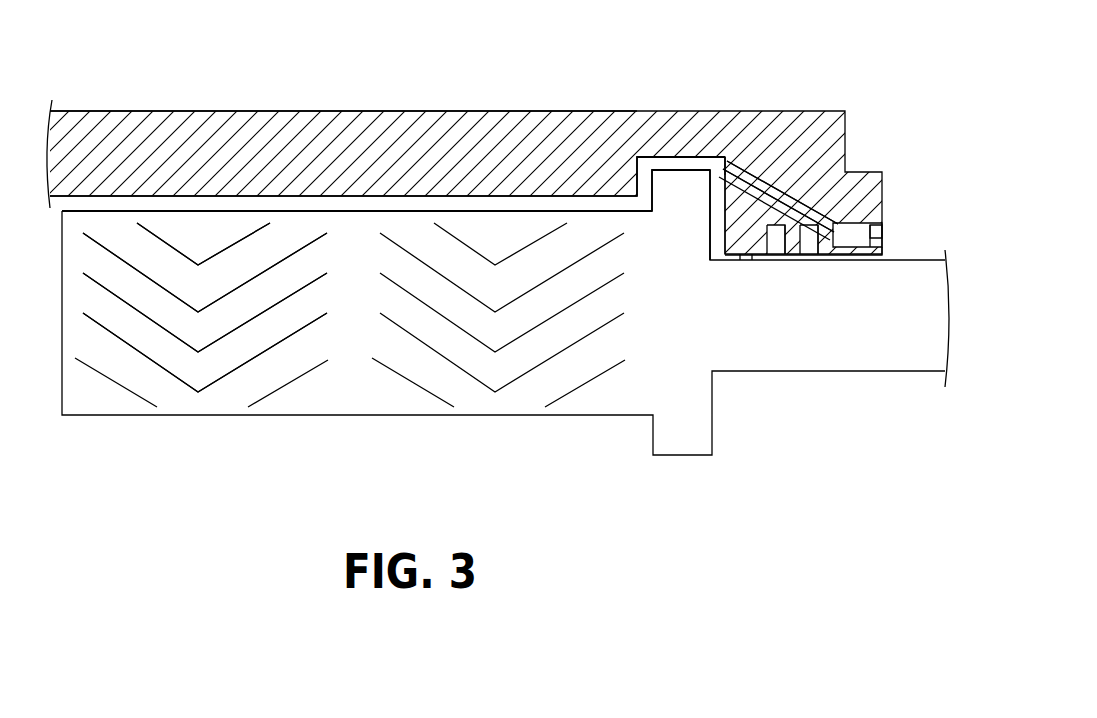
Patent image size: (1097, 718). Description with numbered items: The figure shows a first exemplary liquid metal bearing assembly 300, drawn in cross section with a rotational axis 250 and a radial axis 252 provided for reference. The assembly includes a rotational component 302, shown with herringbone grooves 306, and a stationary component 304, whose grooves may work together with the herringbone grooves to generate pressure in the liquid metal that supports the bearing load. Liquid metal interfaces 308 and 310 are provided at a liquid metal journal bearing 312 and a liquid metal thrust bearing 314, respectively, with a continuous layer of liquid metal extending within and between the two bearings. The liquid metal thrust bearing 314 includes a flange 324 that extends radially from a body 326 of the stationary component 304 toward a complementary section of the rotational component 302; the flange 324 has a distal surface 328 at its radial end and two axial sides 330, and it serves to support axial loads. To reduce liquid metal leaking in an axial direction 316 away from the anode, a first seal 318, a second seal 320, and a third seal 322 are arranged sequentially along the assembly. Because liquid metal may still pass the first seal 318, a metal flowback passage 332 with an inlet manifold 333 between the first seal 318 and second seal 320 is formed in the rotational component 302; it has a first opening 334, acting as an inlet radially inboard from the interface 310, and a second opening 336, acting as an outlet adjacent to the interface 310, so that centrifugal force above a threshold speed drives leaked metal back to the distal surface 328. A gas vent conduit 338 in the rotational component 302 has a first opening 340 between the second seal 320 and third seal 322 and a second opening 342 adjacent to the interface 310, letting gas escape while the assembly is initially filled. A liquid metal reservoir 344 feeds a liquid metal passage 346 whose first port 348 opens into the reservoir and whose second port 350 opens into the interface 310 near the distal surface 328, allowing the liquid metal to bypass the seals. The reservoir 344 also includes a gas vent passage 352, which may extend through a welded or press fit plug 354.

The liquid metal bearing assembly 300 is at (867, 33).
The rotational component 302 is at (197, 110).
The stationary component 304 is at (335, 418).
The herringbone grooves 306 is at (410, 380).
The liquid metal interface 308 is at (422, 204).
The liquid metal interface 310 is at (673, 159).
The liquid metal journal bearing 312 is at (494, 186).
The liquid metal thrust bearing 314 is at (649, 154).
The axial direction 316 is at (700, 255).
The first seal 318 is at (745, 260).
The second seal 320 is at (790, 261).
The third seal 322 is at (822, 260).
The flange 324 is at (664, 199).
The body 326 is at (602, 243).
The distal surface 328 is at (688, 169).
The axial sides 330 is at (650, 183).
The metal flowback passage 332 is at (739, 188).
The inlet manifold 333 is at (773, 260).
The first opening 334 is at (719, 189).
The second opening 336 is at (765, 236).
The gas vent conduit 338 is at (755, 182).
The first opening 340 is at (805, 236).
The second opening 342 is at (719, 157).
The liquid metal reservoir 344 is at (876, 252).
The liquid metal passage 346 is at (804, 200).
The first port 348 is at (843, 226).
The second port 350 is at (731, 151).
The gas vent passage 352 is at (886, 232).
The plug 354 is at (855, 239).
The rotational axis 250 is at (941, 317).
The radial axis 252 is at (902, 317).